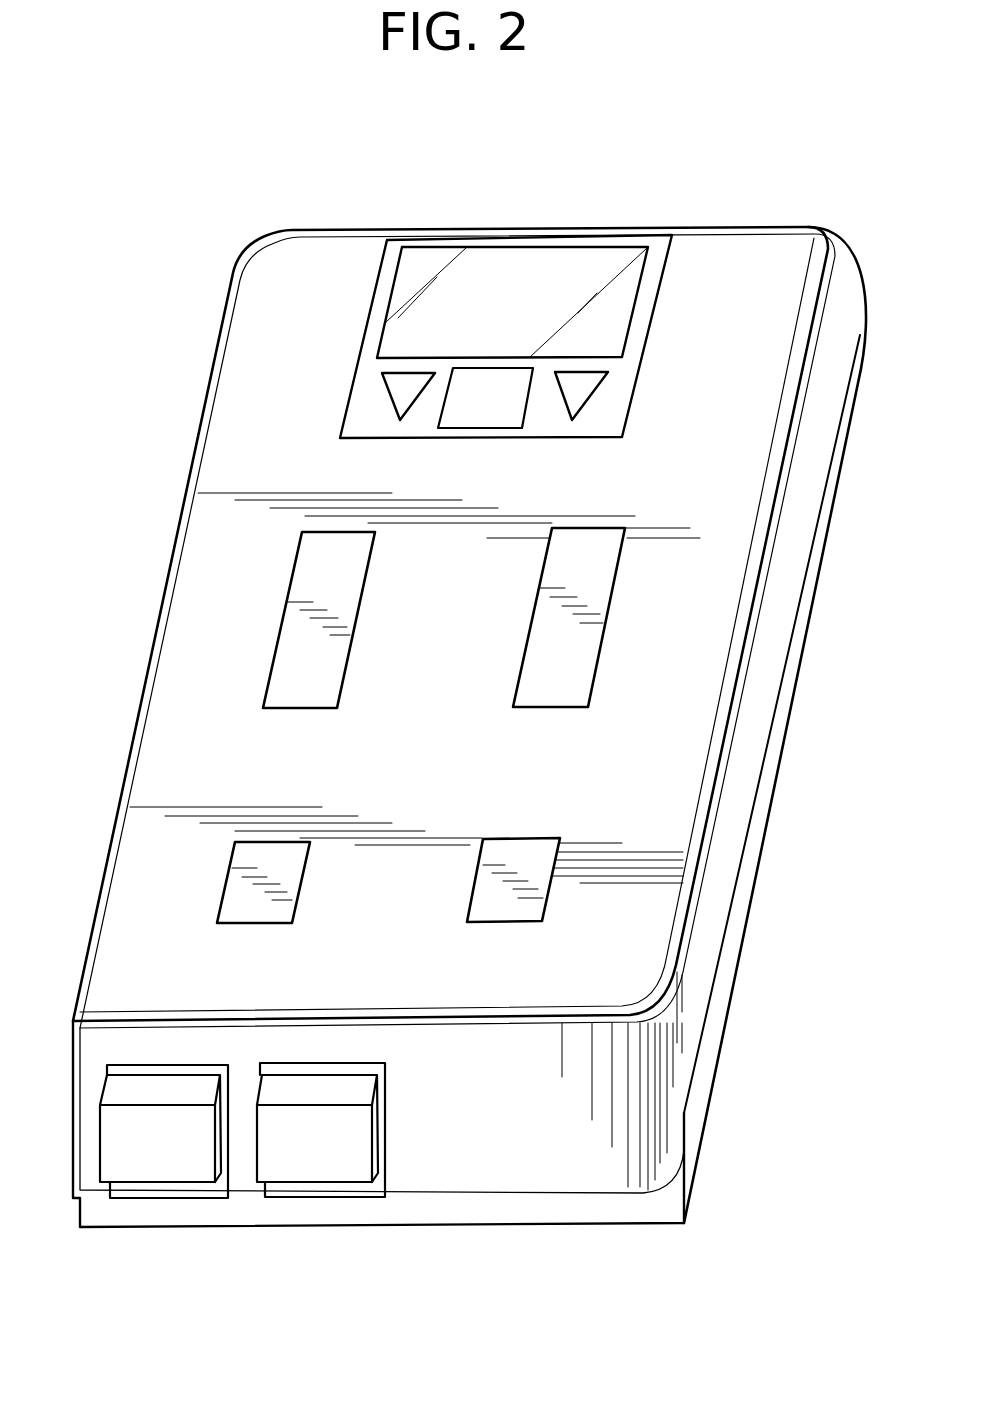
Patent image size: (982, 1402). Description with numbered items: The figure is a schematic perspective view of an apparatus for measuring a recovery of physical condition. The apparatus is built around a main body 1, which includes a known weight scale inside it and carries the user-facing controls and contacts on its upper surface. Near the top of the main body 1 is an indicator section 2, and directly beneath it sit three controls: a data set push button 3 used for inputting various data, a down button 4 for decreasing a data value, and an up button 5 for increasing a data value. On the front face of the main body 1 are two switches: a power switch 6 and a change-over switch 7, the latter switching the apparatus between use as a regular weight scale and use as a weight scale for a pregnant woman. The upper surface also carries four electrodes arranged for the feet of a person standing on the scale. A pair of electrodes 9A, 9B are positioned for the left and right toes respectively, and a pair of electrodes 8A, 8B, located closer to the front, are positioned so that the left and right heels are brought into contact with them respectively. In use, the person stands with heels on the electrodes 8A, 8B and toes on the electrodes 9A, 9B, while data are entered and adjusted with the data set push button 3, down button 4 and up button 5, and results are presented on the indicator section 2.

The main body 1 is at (232, 518).
The indicator section 2 is at (523, 283).
The data set push button 3 is at (475, 378).
The down button 4 is at (388, 387).
The up button 5 is at (583, 390).
The power switch 6 is at (157, 1167).
The change-over switch 7 is at (318, 1165).
The electrode 8A is at (227, 892).
The electrode 8B is at (477, 883).
The electrode 9A is at (292, 625).
The electrode 9B is at (525, 643).